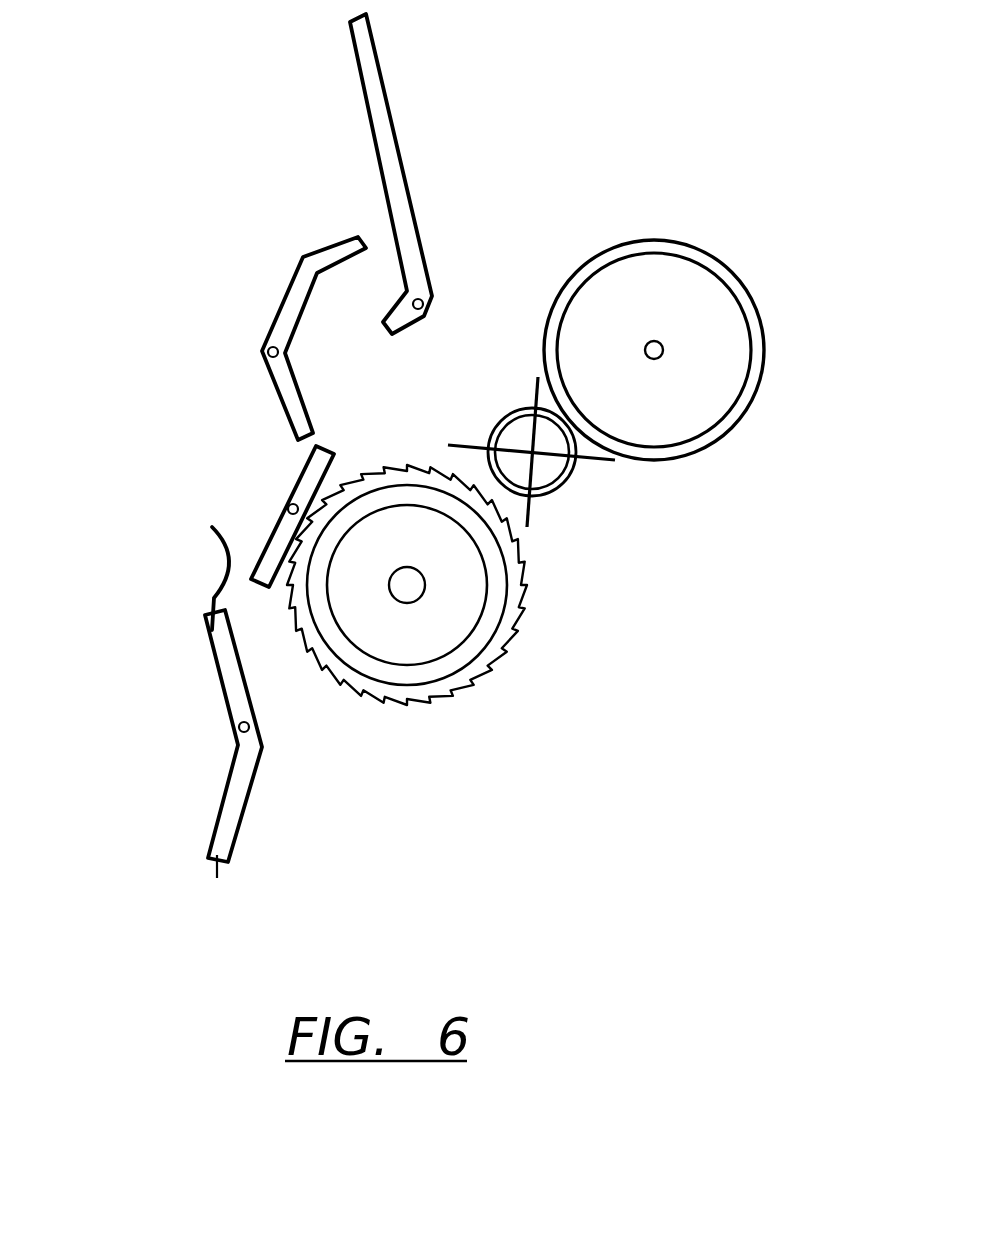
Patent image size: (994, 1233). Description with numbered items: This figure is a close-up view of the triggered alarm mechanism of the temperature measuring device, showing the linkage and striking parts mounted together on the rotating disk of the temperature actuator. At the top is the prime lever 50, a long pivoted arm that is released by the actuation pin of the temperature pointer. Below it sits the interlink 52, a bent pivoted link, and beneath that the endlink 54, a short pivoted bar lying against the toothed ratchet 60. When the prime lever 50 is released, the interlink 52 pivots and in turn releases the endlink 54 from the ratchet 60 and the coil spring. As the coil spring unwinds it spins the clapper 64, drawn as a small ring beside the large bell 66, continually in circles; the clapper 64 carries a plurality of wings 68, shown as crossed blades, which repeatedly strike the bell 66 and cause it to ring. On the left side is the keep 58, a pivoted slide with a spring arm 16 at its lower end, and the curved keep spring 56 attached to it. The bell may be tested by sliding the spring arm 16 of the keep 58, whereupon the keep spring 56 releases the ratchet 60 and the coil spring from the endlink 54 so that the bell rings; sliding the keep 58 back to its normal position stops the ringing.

The spring arm 16 is at (217, 867).
The prime lever 50 is at (363, 110).
The interlink 52 is at (290, 305).
The endlink 54 is at (290, 482).
The keep spring 56 is at (220, 580).
The keep 58 is at (237, 697).
The ratchet 60 is at (507, 653).
The clapper 64 is at (548, 468).
The bell 66 is at (755, 326).
The wings 68 is at (535, 400).